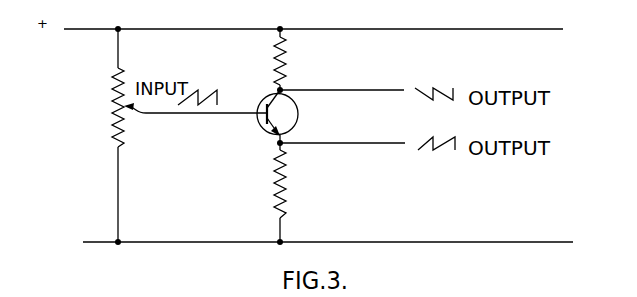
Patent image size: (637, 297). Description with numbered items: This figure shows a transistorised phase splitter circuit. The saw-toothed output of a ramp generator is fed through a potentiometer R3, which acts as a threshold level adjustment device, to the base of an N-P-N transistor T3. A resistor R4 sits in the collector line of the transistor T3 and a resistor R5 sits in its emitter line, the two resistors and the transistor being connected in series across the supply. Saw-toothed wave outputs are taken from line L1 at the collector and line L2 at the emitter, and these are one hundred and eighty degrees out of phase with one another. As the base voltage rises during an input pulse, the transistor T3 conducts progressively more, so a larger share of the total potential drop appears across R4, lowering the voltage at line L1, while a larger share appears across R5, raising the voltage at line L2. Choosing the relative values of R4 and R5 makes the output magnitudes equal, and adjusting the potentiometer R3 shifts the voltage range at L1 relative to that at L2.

The potentiometer R3 is at (176, 135).
The collector resistor R4 is at (293, 59).
The emitter resistor R5 is at (293, 192).
The N-P-N transistor T3 is at (289, 116).
The output line L1 is at (353, 90).
The output line L2 is at (370, 144).